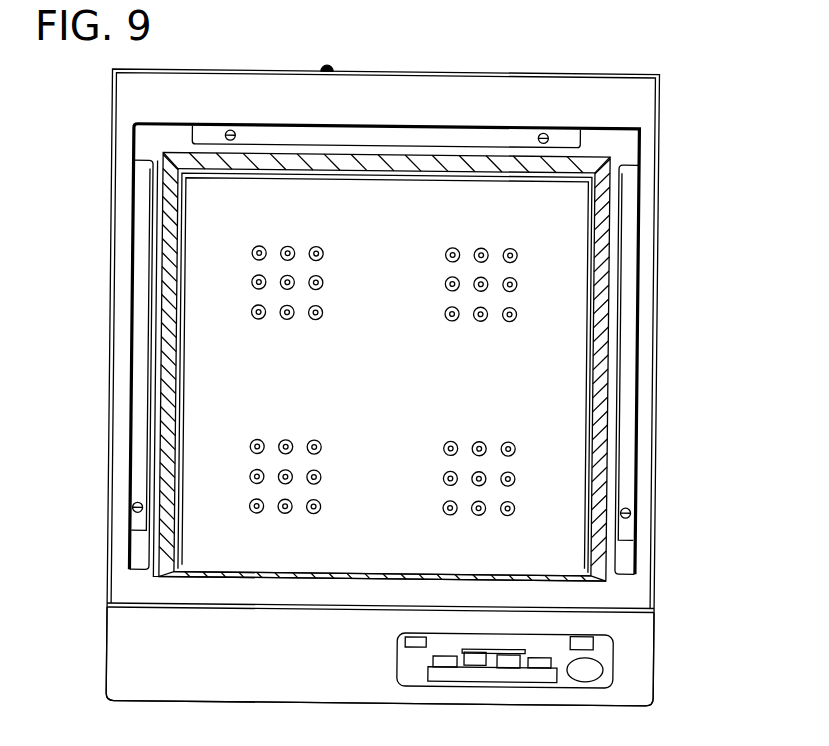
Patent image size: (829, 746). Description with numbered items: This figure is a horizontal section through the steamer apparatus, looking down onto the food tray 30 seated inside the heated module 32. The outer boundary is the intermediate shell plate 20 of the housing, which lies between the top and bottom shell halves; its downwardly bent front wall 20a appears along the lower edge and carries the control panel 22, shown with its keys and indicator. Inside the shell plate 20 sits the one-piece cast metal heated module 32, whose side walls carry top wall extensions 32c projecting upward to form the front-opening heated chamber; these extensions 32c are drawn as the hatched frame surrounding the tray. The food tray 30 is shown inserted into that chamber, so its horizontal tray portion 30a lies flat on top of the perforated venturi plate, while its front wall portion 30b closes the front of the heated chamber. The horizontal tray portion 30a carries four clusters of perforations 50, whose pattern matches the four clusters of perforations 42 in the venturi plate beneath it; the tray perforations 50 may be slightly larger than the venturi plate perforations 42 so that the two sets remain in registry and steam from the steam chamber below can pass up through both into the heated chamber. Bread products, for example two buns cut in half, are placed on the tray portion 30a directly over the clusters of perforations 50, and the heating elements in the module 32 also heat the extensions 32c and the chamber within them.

The intermediate shell plate 20 is at (158, 592).
The front wall 20a is at (181, 678).
The control panel 22 is at (568, 650).
The food tray 30 is at (373, 578).
The horizontal tray portion 30a is at (420, 397).
The front wall portion 30b is at (275, 577).
The heated module 32 is at (614, 380).
The top wall extensions 32c is at (606, 208).
The perforations 42 is at (316, 246).
The perforations 50 is at (448, 280).